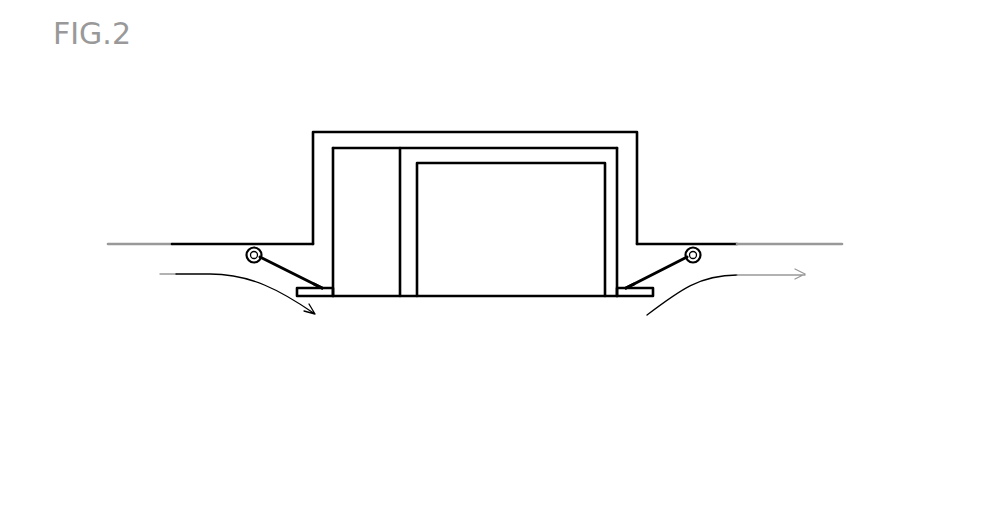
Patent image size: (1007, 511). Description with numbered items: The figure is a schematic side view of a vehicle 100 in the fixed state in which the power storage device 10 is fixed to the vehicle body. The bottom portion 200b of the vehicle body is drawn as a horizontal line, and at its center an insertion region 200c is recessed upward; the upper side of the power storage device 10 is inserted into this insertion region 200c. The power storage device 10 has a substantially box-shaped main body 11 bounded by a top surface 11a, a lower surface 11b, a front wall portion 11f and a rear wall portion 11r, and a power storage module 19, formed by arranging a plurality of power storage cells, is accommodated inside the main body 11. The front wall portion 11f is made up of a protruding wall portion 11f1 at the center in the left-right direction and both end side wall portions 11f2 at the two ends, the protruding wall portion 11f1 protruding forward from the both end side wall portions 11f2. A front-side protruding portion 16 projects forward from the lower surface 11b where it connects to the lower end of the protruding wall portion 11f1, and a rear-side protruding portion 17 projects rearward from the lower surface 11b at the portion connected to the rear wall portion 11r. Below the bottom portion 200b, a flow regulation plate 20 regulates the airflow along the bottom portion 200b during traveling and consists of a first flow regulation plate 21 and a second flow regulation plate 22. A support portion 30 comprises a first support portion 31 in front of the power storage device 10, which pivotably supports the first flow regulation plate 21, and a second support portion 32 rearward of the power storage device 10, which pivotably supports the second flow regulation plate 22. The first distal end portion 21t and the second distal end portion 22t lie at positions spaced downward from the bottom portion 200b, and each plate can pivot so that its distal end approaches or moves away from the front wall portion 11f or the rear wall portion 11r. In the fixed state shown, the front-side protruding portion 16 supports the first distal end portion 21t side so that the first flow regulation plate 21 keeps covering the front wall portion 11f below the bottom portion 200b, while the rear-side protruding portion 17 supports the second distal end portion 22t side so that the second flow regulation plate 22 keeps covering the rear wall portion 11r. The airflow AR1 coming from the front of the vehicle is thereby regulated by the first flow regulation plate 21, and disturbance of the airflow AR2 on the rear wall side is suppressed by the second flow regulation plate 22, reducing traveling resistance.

The vehicle 100 is at (727, 92).
The bottom portion 200b is at (127, 248).
The insertion region 200c is at (635, 167).
The power storage device 10 is at (419, 314).
The main body 11 is at (551, 136).
The top surface 11a is at (462, 147).
The lower surface 11b is at (505, 298).
The rear wall portion 11r is at (619, 216).
The front wall portion 11f is at (330, 181).
The protruding wall portion 11f1 is at (333, 168).
The both end side wall portions 11f2 is at (400, 170).
The power storage module 19 is at (514, 163).
The front-side protruding portion 16 is at (317, 297).
The rear-side protruding portion 17 is at (630, 299).
The flow regulation plate 20 is at (480, 272).
The first flow regulation plate 21 is at (290, 267).
The second flow regulation plate 22 is at (662, 268).
The first distal end portion 21t is at (318, 285).
The second distal end portion 22t is at (628, 287).
The support portion 30 is at (483, 211).
The first support portion 31 is at (251, 247).
The second support portion 32 is at (697, 246).
The airflow AR1 is at (261, 294).
The airflow AR2 is at (698, 293).